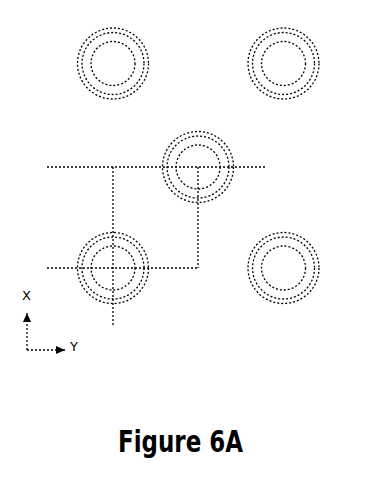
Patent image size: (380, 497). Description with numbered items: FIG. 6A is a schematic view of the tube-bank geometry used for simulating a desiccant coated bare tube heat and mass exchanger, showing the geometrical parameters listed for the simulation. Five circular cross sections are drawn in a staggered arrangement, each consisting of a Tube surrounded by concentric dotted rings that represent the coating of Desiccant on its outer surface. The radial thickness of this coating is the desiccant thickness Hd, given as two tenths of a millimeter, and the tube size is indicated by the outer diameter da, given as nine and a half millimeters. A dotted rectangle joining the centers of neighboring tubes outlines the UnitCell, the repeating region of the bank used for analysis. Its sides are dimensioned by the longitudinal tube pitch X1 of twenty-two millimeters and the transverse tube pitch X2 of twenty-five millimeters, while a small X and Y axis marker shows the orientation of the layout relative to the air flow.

The desiccant Desiccant is at (222, 142).
The tube Tube is at (229, 167).
The unit cell UnitCell is at (200, 205).
The longitudinal tube pitch X1 is at (66, 268).
The transverse tube pitch X2 is at (284, 247).
The desiccant thickness Hd is at (321, 231).
The tube outer diameter da is at (258, 268).